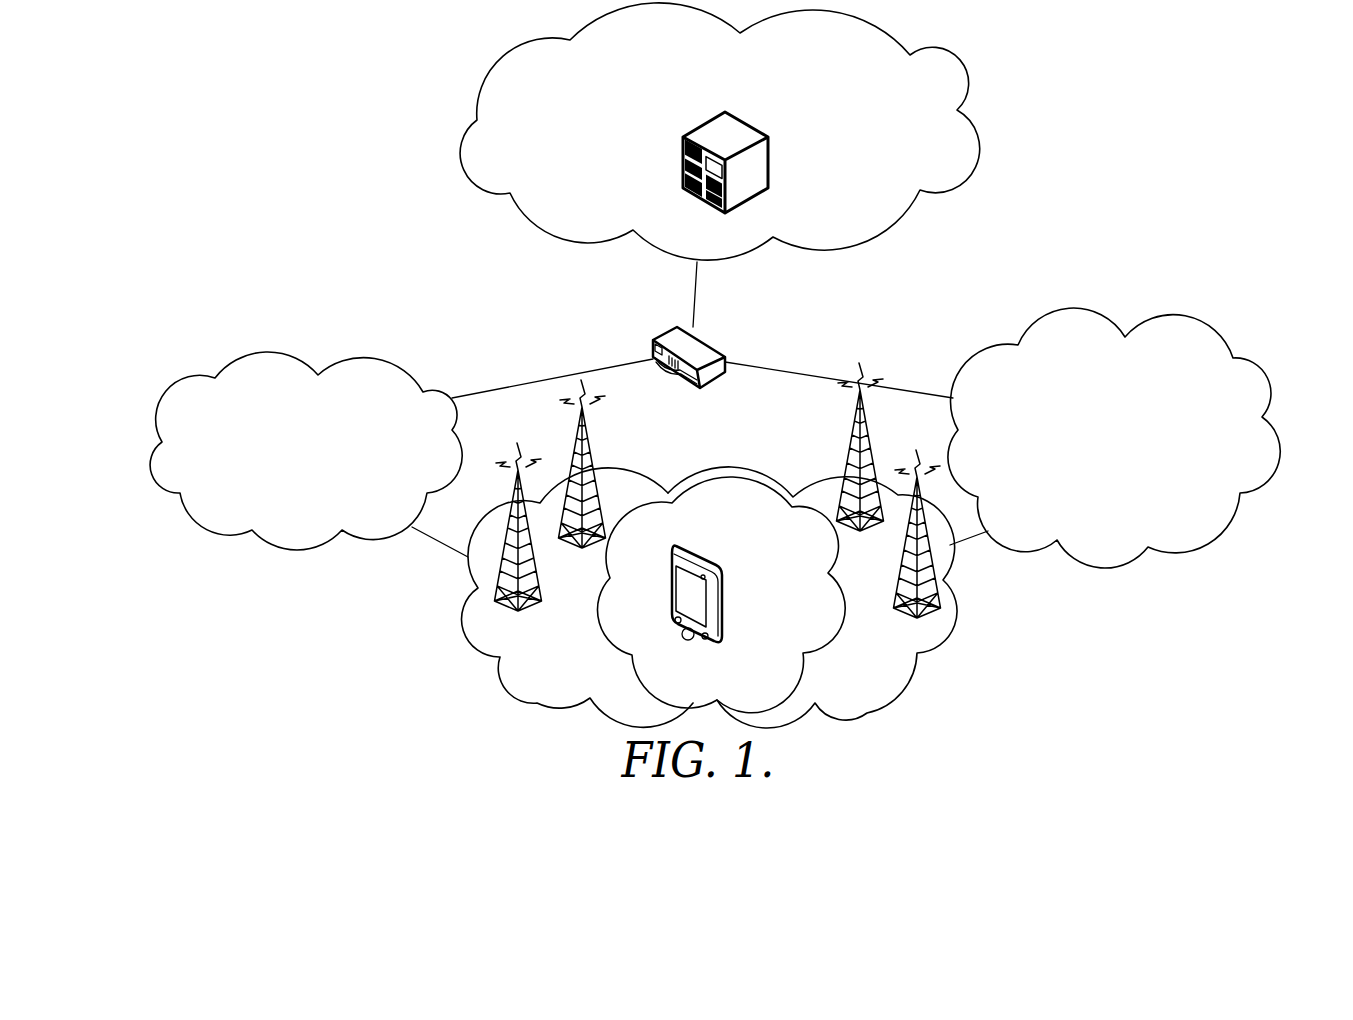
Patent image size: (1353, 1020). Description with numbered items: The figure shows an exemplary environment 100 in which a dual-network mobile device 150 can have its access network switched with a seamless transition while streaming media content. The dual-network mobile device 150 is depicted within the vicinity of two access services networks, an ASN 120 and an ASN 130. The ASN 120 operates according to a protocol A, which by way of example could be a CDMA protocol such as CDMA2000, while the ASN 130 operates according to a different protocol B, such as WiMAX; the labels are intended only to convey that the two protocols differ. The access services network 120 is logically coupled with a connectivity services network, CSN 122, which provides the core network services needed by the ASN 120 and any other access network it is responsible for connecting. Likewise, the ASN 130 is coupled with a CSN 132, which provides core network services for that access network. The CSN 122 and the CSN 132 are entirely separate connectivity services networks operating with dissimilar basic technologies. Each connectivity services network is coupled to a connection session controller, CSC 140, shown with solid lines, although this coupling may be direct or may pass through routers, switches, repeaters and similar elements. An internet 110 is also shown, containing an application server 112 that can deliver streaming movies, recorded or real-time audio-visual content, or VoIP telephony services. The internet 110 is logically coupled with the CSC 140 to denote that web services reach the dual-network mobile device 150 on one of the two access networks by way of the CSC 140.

The exemplary environment 100 is at (210, 123).
The internet 110 is at (495, 53).
The application server 112 is at (698, 133).
The access services network (ASN) 120 is at (538, 703).
The connectivity services network (CSN) 122 is at (303, 552).
The access services network (ASN) 130 is at (867, 713).
The connectivity services network (CSN) 132 is at (1107, 568).
The connection session controller (CSC) 140 is at (665, 338).
The dual-network mobile device 150 is at (707, 557).